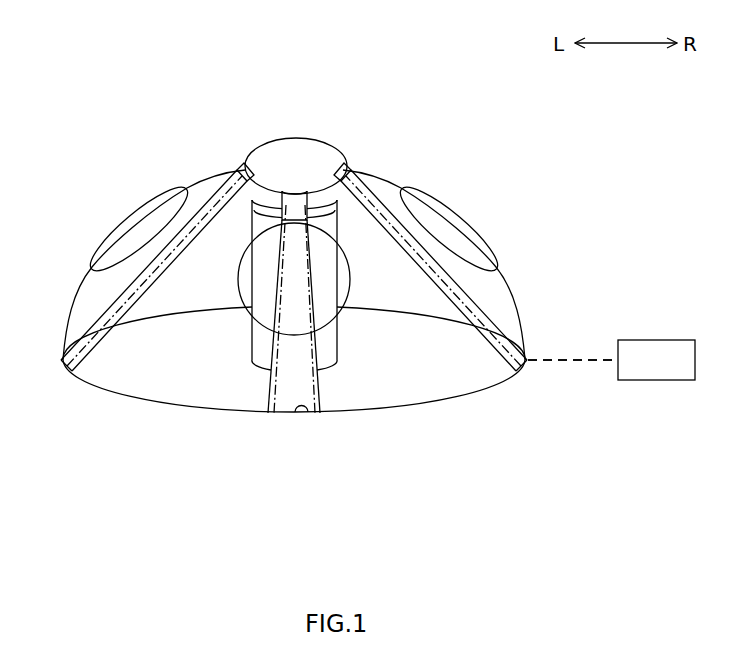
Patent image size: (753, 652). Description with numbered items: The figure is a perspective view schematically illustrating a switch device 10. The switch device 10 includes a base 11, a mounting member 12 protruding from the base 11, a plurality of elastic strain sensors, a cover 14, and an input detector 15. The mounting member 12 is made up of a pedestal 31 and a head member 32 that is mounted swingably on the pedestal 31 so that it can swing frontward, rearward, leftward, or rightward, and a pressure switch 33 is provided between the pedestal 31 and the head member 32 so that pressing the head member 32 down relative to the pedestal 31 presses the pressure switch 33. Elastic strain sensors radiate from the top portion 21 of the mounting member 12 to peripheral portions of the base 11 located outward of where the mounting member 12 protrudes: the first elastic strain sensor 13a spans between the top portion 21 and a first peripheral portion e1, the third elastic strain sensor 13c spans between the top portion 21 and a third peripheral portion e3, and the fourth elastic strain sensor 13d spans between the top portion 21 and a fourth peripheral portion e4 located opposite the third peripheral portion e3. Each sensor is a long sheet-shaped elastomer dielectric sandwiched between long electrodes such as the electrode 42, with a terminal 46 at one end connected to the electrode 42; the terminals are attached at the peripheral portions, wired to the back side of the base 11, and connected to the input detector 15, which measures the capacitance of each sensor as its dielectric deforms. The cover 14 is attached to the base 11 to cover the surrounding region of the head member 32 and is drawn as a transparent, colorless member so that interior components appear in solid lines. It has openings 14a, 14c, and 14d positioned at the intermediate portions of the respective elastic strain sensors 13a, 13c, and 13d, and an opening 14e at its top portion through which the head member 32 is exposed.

The switch device 10 is at (132, 80).
The base 11 is at (187, 391).
The mounting member 12 is at (345, 338).
The first elastic strain sensor 13a is at (266, 388).
The third elastic strain sensor 13c is at (110, 346).
The fourth elastic strain sensor 13d is at (496, 360).
The cover 14 is at (392, 170).
The opening 14a is at (350, 292).
The opening 14c is at (120, 240).
The opening 14d is at (484, 252).
The opening 14e is at (236, 165).
The input detector 15 is at (670, 340).
The top portion 21 is at (272, 130).
The pedestal 31 is at (337, 230).
The head member 32 is at (318, 153).
The pressure switch 33 is at (262, 213).
The electrode 42 is at (160, 280).
The terminal 46 is at (566, 352).
The first peripheral portion e1 is at (302, 413).
The third peripheral portion e3 is at (63, 360).
The fourth peripheral portion e4 is at (525, 366).